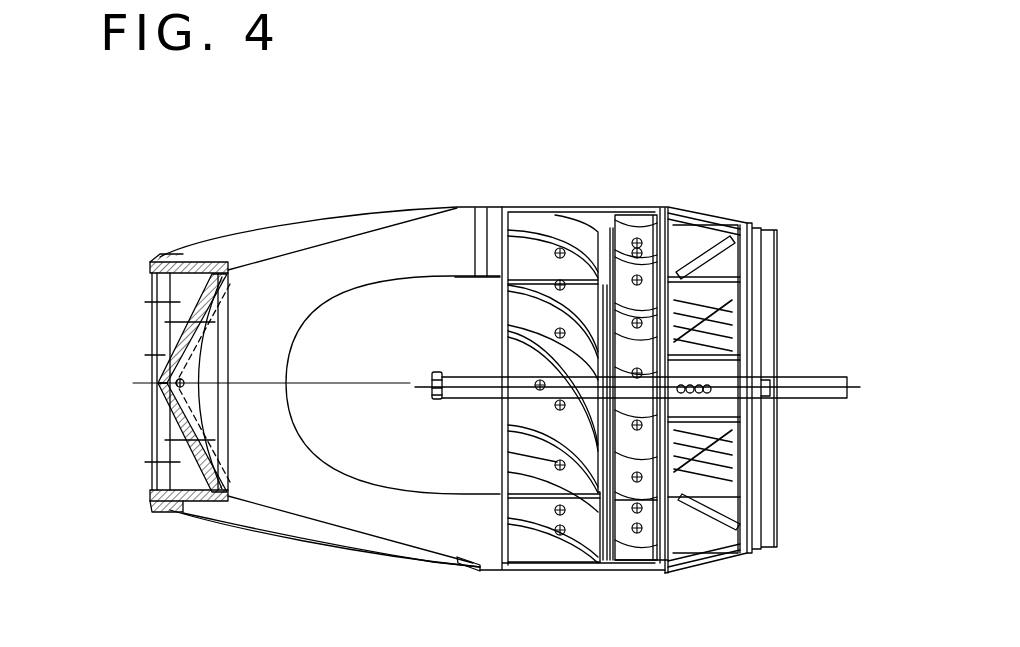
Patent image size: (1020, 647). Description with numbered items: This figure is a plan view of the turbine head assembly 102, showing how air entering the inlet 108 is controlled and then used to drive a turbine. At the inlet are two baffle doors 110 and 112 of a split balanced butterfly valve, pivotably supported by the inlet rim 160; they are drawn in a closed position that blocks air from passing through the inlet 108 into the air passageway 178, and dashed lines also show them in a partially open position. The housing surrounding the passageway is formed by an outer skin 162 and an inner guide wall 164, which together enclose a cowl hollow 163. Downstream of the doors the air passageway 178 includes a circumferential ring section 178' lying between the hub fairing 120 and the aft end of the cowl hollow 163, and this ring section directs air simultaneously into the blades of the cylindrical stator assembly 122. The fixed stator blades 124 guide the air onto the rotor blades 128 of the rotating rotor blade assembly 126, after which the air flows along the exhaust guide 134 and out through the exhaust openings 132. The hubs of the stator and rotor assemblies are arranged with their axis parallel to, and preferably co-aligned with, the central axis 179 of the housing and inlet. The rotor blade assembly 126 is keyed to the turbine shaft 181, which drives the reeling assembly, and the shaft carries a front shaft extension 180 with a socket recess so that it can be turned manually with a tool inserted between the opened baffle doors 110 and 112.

The turbine head assembly 102 is at (166, 224).
The inlet 108 is at (175, 298).
The baffle door 110 is at (163, 355).
The baffle door 112 is at (160, 432).
The hub fairing 120 is at (393, 288).
The stator assembly 122 is at (528, 206).
The stator blades 124 is at (558, 225).
The rotor blade assembly 126 is at (639, 220).
The rotor blades 128 is at (628, 553).
The exhaust openings 132 is at (697, 245).
The exhaust guide 134 is at (705, 525).
The inlet rim 160 is at (155, 262).
The outer skin 162 is at (237, 535).
The cowl hollow 163 is at (368, 222).
The inner guide wall 164 is at (325, 523).
The air passageway 178 is at (272, 320).
The circumferential ring section 178' is at (448, 377).
The central axis 179 is at (268, 388).
The front shaft extension 180 is at (433, 400).
The turbine shaft 181 is at (812, 382).